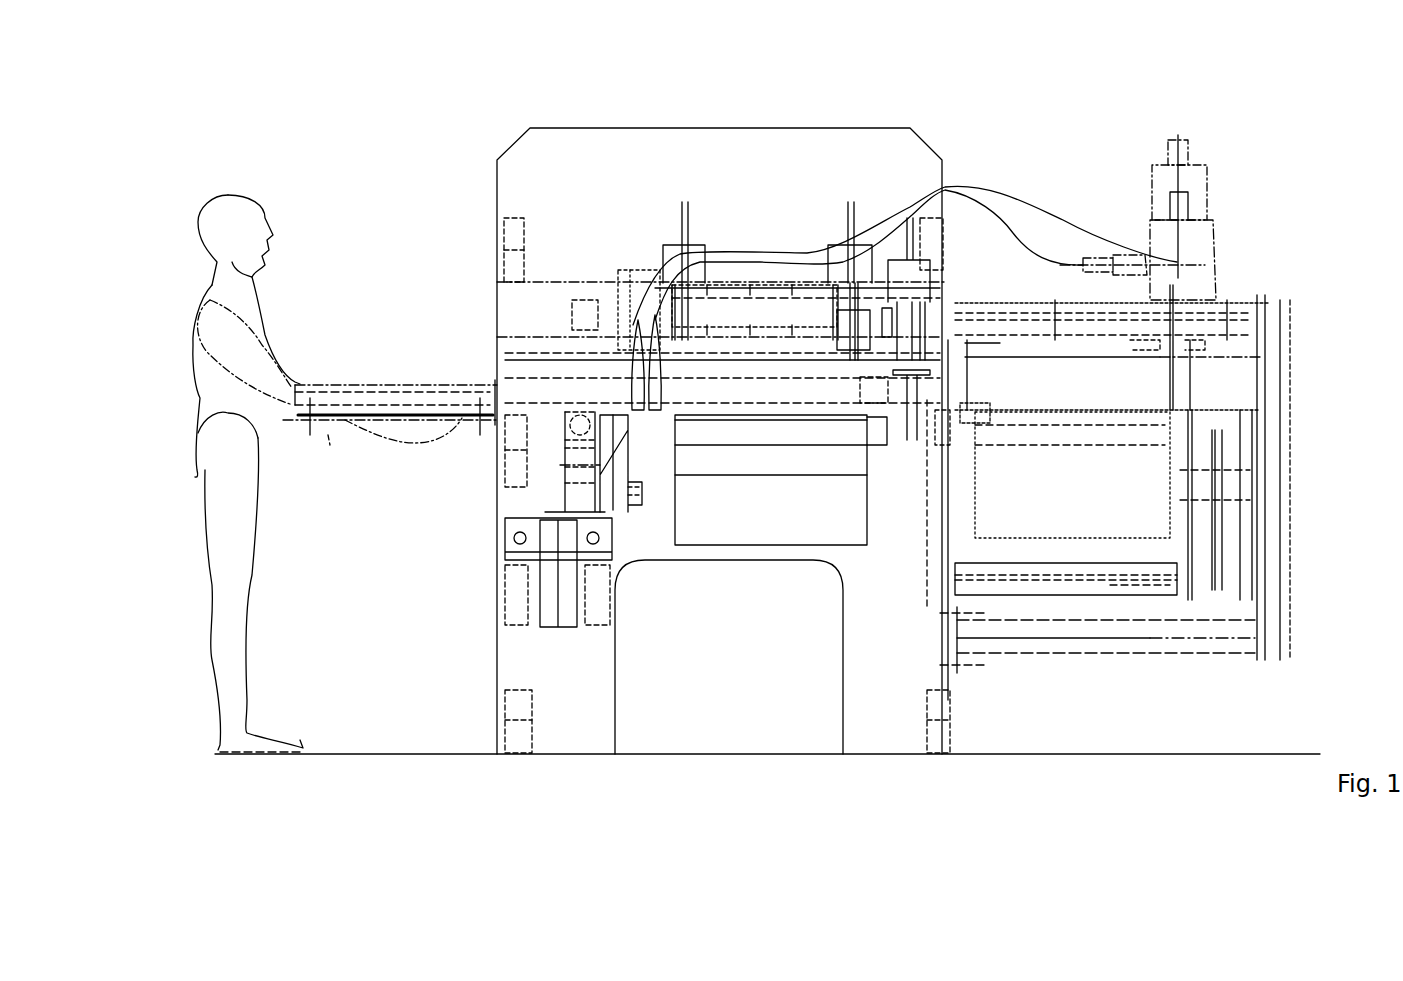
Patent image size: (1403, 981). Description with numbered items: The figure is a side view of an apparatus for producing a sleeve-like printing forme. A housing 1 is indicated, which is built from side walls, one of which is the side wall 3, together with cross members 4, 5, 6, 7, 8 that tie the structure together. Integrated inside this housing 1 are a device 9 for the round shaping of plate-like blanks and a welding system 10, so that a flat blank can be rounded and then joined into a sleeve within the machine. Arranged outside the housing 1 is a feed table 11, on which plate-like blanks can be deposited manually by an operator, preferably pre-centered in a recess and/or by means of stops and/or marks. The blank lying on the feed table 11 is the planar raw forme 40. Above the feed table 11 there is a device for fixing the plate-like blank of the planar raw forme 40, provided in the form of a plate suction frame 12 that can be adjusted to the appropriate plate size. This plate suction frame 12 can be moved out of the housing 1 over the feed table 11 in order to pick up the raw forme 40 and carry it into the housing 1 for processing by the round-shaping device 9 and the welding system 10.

The housing 1 is at (768, 118).
The side wall 3 is at (833, 150).
The cross member 4 is at (520, 733).
The cross member 5 is at (937, 738).
The cross member 6 is at (935, 227).
The cross member 7 is at (510, 250).
The cross member 8 is at (512, 468).
The device for the round shaping of plate-like blanks 9 is at (642, 478).
The welding system 10 is at (633, 373).
The feed table 11 is at (328, 435).
The plate suction frame 12 is at (352, 388).
The planar raw forme 40 is at (390, 417).